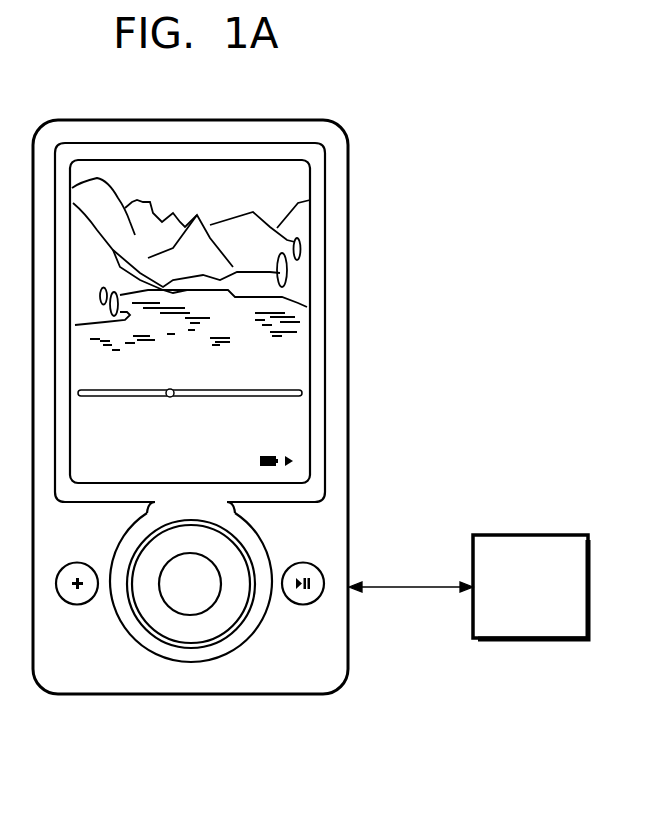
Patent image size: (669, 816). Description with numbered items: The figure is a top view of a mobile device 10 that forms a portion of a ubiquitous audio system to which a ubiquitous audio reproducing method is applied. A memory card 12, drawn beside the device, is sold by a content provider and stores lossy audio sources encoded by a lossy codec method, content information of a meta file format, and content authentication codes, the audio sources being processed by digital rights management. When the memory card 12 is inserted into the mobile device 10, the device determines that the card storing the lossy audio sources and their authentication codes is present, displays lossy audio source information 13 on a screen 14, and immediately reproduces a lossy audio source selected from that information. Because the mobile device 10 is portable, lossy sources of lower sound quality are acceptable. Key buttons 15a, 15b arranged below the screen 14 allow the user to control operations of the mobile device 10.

The mobile device 10 is at (390, 182).
The memory card 12 is at (532, 534).
The lossy audio source information 13 is at (297, 278).
The screen 14 is at (349, 436).
The key buttons 15a is at (78, 604).
The key buttons 15b is at (192, 628).